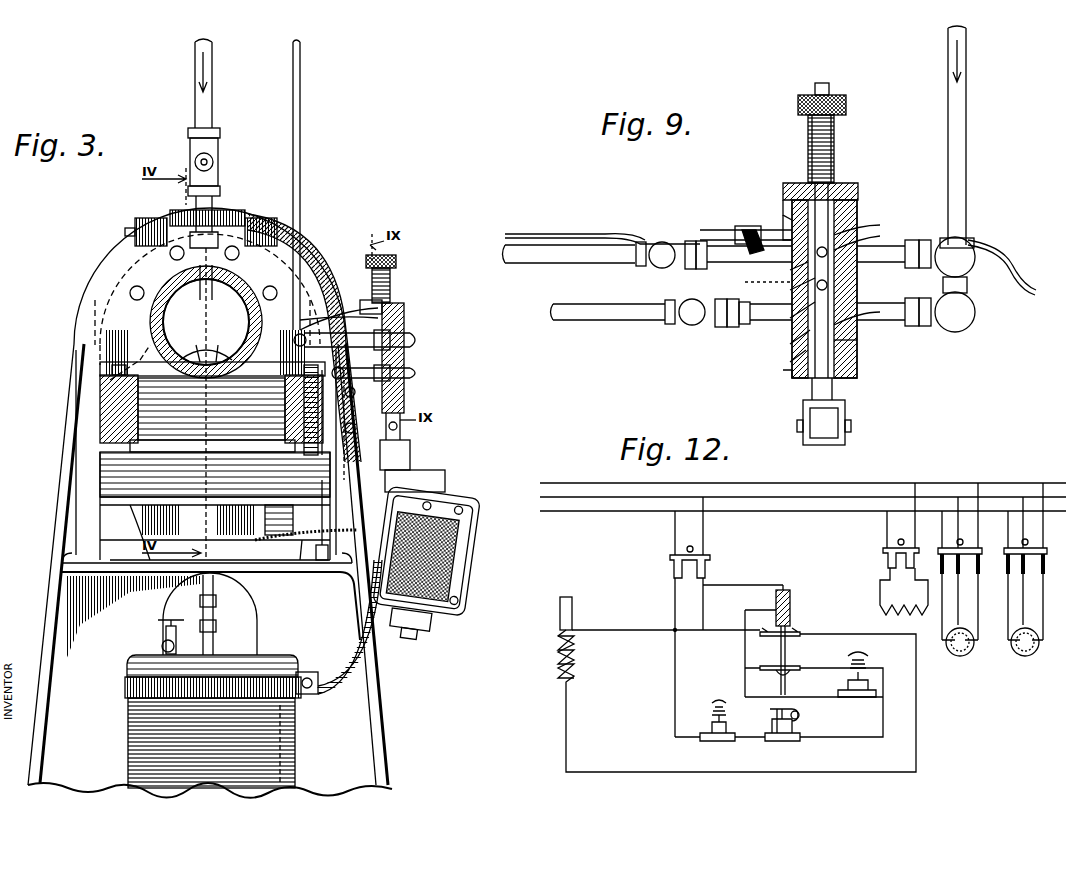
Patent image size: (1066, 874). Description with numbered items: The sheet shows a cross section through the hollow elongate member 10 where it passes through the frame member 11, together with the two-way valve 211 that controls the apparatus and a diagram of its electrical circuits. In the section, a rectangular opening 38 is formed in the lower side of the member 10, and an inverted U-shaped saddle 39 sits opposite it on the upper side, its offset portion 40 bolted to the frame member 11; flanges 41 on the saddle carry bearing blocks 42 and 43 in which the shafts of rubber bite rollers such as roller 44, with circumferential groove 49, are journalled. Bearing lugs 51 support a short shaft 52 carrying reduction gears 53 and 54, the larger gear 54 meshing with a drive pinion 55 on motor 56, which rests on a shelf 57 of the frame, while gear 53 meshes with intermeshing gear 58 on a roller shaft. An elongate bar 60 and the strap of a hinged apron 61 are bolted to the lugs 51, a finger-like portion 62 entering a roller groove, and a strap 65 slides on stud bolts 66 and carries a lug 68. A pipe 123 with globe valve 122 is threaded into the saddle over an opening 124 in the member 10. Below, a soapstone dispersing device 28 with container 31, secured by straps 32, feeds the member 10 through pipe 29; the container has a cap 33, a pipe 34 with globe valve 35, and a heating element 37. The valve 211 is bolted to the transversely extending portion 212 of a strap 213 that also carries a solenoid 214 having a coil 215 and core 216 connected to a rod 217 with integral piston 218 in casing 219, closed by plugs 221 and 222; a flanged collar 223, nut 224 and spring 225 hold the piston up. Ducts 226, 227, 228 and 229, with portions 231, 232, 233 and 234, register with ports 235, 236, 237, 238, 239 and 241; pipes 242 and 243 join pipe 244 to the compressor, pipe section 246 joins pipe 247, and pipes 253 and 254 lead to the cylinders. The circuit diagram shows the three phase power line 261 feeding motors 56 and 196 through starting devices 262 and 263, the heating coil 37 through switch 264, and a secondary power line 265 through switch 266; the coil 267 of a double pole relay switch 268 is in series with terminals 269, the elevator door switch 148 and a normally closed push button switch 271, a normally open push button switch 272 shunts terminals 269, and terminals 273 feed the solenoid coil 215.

In FIG. 3, the hollow elongate member 10 is at (206, 404).
In FIG. 3, the frame member 11 is at (40, 703).
In FIG. 3, the soapstone dispersing device 28 is at (292, 768).
In FIG. 3, the pipe 29 is at (213, 598).
In FIG. 3, the container 31 is at (134, 656).
In FIG. 3, the straps 32 is at (306, 672).
In FIG. 3, the cap 33 is at (228, 650).
In FIG. 3, the pipe 34 is at (162, 646).
In FIG. 3, the globe valve 35 is at (176, 636).
In FIG. 3, the heating element 37 is at (290, 738).
In FIG. 12, the heating element 37 is at (904, 600).
In FIG. 3, the rectangular opening 38 is at (207, 337).
In FIG. 3, the saddle 39 is at (160, 262).
In FIG. 3, the offset portion 40 is at (132, 283).
In FIG. 3, the flanges 41 is at (100, 380).
In FIG. 3, the bearing block 42 is at (115, 425).
In FIG. 3, the bearing block 43 is at (362, 430).
In FIG. 3, the rubber bite roller 44 is at (130, 446).
In FIG. 3, the circumferential groove 49 is at (110, 402).
In FIG. 3, the bearing lugs 51 is at (130, 458).
In FIG. 3, the short shaft 52 is at (325, 446).
In FIG. 3, the reduction gear 53 is at (332, 470).
In FIG. 3, the reduction gear 54 is at (362, 425).
In FIG. 3, the drive pinion 55 is at (324, 560).
In FIG. 3, the motor 56 is at (300, 563).
In FIG. 12, the motor 56 is at (962, 656).
In FIG. 3, the shelf 57 is at (96, 563).
In FIG. 3, the intermeshing gear 58 is at (362, 388).
In FIG. 3, the elongate bar 60 is at (165, 486).
In FIG. 3, the hinged apron 61 is at (118, 496).
In FIG. 3, the finger-like portion 62 is at (180, 485).
In FIG. 3, the elongate strap 65 is at (225, 347).
In FIG. 3, the stud bolts 66 is at (98, 350).
In FIG. 3, the lug 68 is at (195, 347).
In FIG. 3, the globe valve 122 is at (220, 150).
In FIG. 3, the pipe 123 is at (212, 92).
In FIG. 3, the opening 124 is at (218, 285).
In FIG. 12, the elevator door switch 148 is at (769, 725).
In FIG. 12, the motor 196 is at (1028, 656).
In FIG. 3, the two-way valve 211 is at (404, 340).
In FIG. 9, the two-way valve 211 is at (859, 205).
In FIG. 3, the transversely extending portion 212 is at (356, 300).
In FIG. 9, the transversely extending portion 212 is at (792, 183).
In FIG. 3, the strap 213 is at (412, 458).
In FIG. 3, the solenoid 214 is at (470, 562).
In FIG. 12, the solenoid 214 is at (575, 657).
In FIG. 3, the coil 215 is at (455, 524).
In FIG. 12, the coil 215 is at (576, 670).
In FIG. 3, the core 216 is at (416, 480).
In FIG. 9, the core 216 is at (846, 446).
In FIG. 12, the core 216 is at (572, 604).
In FIG. 9, the rod 217 is at (808, 137).
In FIG. 9, the piston 218 is at (836, 292).
In FIG. 9, the casing 219 is at (858, 348).
In FIG. 9, the plug 221 is at (794, 380).
In FIG. 9, the plug 222 is at (792, 196).
In FIG. 9, the flanged collar 223 is at (846, 104).
In FIG. 9, the nut 224 is at (815, 90).
In FIG. 9, the spring 225 is at (810, 120).
In FIG. 9, the duct 226 is at (842, 185).
In FIG. 9, the duct 227 is at (782, 360).
In FIG. 9, the duct 228 is at (836, 268).
In FIG. 9, the duct 229 is at (786, 288).
In FIG. 9, the portion 231 is at (790, 228).
In FIG. 9, the portion 232 is at (758, 282).
In FIG. 9, the portion 233 is at (870, 220).
In FIG. 9, the portion 234 is at (786, 317).
In FIG. 9, the port 235 is at (783, 270).
In FIG. 9, the port 236 is at (870, 235).
In FIG. 9, the port 237 is at (784, 341).
In FIG. 9, the port 238 is at (864, 323).
In FIG. 3, the port 239 is at (380, 338).
In FIG. 3, the port 241 is at (396, 369).
In FIG. 9, the pipe 242 is at (894, 254).
In FIG. 9, the pipe 243 is at (920, 330).
In FIG. 3, the pipe 244 is at (300, 133).
In FIG. 9, the pipe 244 is at (966, 138).
In FIG. 3, the section of pipe 246 is at (392, 322).
In FIG. 9, the section of pipe 246 is at (740, 232).
In FIG. 3, the pipe 247 is at (312, 332).
In FIG. 9, the pipe 247 is at (553, 232).
In FIG. 3, the pipe 253 is at (412, 380).
In FIG. 9, the pipe 253 is at (612, 320).
In FIG. 3, the pipe 254 is at (384, 306).
In FIG. 9, the pipe 254 is at (553, 257).
In FIG. 12, the three phase power line 261 is at (780, 497).
In FIG. 12, the starting device 262 is at (979, 566).
In FIG. 12, the starting device 263 is at (1035, 561).
In FIG. 12, the switch 264 is at (886, 566).
In FIG. 12, the secondary power line 265 is at (703, 530).
In FIG. 12, the switch 266 is at (706, 566).
In FIG. 12, the coil 267 is at (790, 596).
In FIG. 12, the double pole relay switch 268 is at (786, 656).
In FIG. 12, the terminals 269 is at (814, 689).
In FIG. 3, the push button switch 271 is at (176, 208).
In FIG. 12, the push button switch 271 is at (719, 709).
In FIG. 3, the push button switch 272 is at (278, 222).
In FIG. 12, the push button switch 272 is at (858, 660).
In FIG. 12, the terminals 273 is at (786, 630).